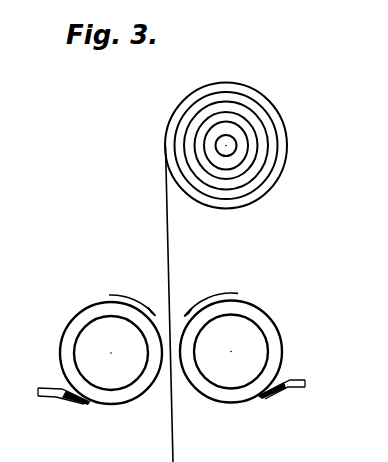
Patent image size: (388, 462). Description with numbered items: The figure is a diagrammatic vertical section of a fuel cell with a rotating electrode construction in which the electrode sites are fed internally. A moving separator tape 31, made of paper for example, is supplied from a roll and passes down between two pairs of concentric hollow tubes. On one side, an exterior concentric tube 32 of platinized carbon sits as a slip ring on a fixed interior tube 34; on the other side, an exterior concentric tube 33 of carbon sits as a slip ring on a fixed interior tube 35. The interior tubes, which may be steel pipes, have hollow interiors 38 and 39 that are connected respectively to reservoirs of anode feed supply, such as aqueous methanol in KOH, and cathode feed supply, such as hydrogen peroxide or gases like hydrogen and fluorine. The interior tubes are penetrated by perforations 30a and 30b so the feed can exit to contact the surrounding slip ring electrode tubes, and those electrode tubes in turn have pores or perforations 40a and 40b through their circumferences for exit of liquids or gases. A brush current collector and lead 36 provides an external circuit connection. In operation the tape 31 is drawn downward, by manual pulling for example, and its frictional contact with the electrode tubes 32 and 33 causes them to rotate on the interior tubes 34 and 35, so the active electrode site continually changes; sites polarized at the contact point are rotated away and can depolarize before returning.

The moving separator tape 31 is at (288, 130).
The perforations 30a is at (87, 358).
The perforations 30b is at (258, 376).
The exterior concentric tube 32 is at (63, 333).
The exterior concentric tube 33 is at (285, 338).
The interior tube 34 is at (72, 362).
The interior tube 35 is at (266, 362).
The brush current collector and lead 36 is at (53, 397).
The hollow interior 38 is at (108, 363).
The hollow interior 39 is at (230, 362).
The pores or perforations 40a is at (110, 302).
The pores or perforations 40b is at (267, 318).